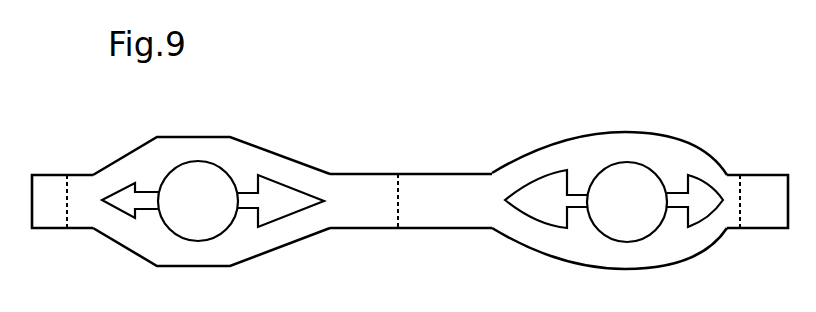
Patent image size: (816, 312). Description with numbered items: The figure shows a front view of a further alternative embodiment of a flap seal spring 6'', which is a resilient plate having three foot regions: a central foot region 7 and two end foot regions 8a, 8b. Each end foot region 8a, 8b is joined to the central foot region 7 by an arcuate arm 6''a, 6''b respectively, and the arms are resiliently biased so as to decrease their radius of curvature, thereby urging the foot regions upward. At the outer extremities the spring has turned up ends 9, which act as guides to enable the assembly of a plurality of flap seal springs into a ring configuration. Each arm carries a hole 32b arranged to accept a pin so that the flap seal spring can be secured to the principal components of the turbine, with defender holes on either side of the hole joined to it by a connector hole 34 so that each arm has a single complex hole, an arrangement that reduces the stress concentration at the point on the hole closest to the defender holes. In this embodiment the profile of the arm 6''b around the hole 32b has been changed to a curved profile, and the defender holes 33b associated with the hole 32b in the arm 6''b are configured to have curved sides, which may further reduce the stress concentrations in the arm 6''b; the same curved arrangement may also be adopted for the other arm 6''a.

The turned up ends 9 is at (49, 192).
The end foot region 8a is at (75, 188).
The end foot region 8b is at (735, 197).
The arm 6''a is at (211, 189).
The arm 6''b is at (600, 196).
The flap seal spring 6'' is at (411, 232).
The central foot region 7 is at (396, 201).
The connector hole 34 is at (147, 200).
The defender holes 33b is at (550, 185).
The hole 32b is at (630, 218).